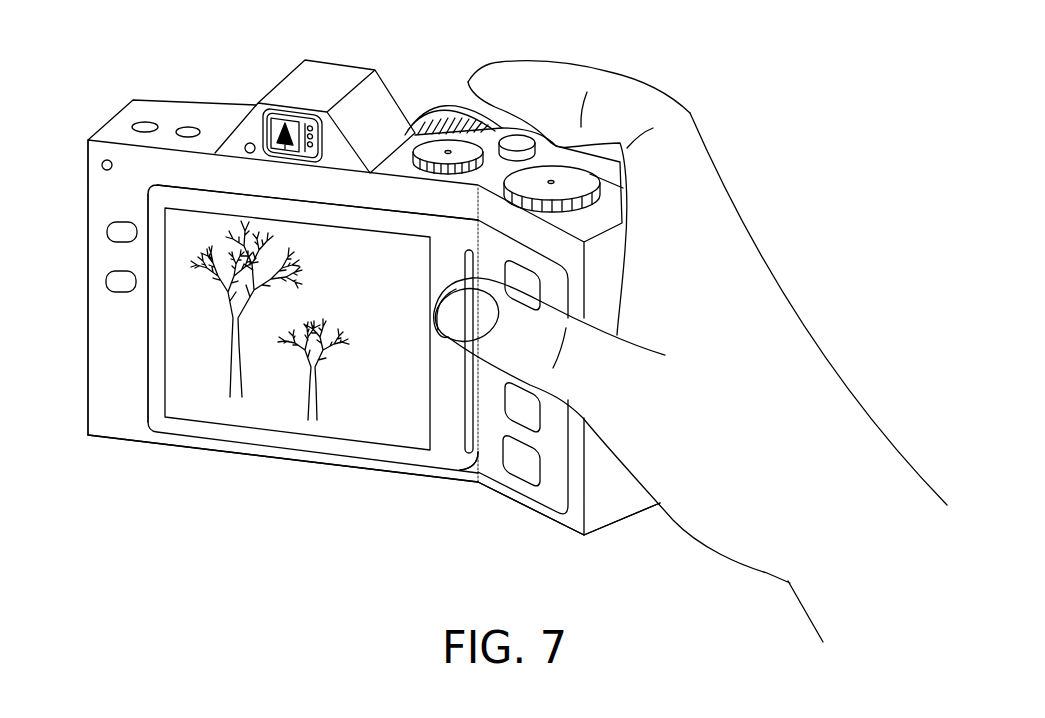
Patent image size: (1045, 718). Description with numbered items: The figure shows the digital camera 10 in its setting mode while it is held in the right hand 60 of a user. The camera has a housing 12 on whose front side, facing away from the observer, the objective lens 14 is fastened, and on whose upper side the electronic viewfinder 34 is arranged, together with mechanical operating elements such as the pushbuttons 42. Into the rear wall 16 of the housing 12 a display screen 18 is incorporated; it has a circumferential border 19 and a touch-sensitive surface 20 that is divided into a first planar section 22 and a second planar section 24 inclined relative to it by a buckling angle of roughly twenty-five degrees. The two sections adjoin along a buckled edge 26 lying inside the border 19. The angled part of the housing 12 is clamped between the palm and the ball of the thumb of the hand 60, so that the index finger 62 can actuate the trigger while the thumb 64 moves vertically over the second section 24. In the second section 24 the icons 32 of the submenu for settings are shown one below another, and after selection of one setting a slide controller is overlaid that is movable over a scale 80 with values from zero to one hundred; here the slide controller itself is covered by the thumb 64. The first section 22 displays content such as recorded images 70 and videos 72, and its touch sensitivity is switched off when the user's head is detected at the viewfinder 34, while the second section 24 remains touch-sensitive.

The digital camera 10 is at (116, 460).
The housing 12 is at (635, 507).
The objective lens 14 is at (445, 102).
The rear wall 16 is at (99, 340).
The display screen 18 is at (142, 389).
The circumferential border 19 is at (163, 437).
The touch-sensitive surface 20 is at (343, 448).
The first planar section 22 is at (293, 460).
The second planar section 24 is at (544, 518).
The buckled edge 26 is at (478, 462).
The icons 32 is at (532, 475).
The electronic viewfinder 34 is at (375, 70).
The pushbuttons 42 is at (120, 237).
The hand 60 is at (758, 283).
The index finger 62 is at (628, 90).
The thumb 64 is at (457, 327).
The recorded images 70 is at (187, 207).
The videos 72 is at (233, 237).
The scale 80 is at (440, 272).